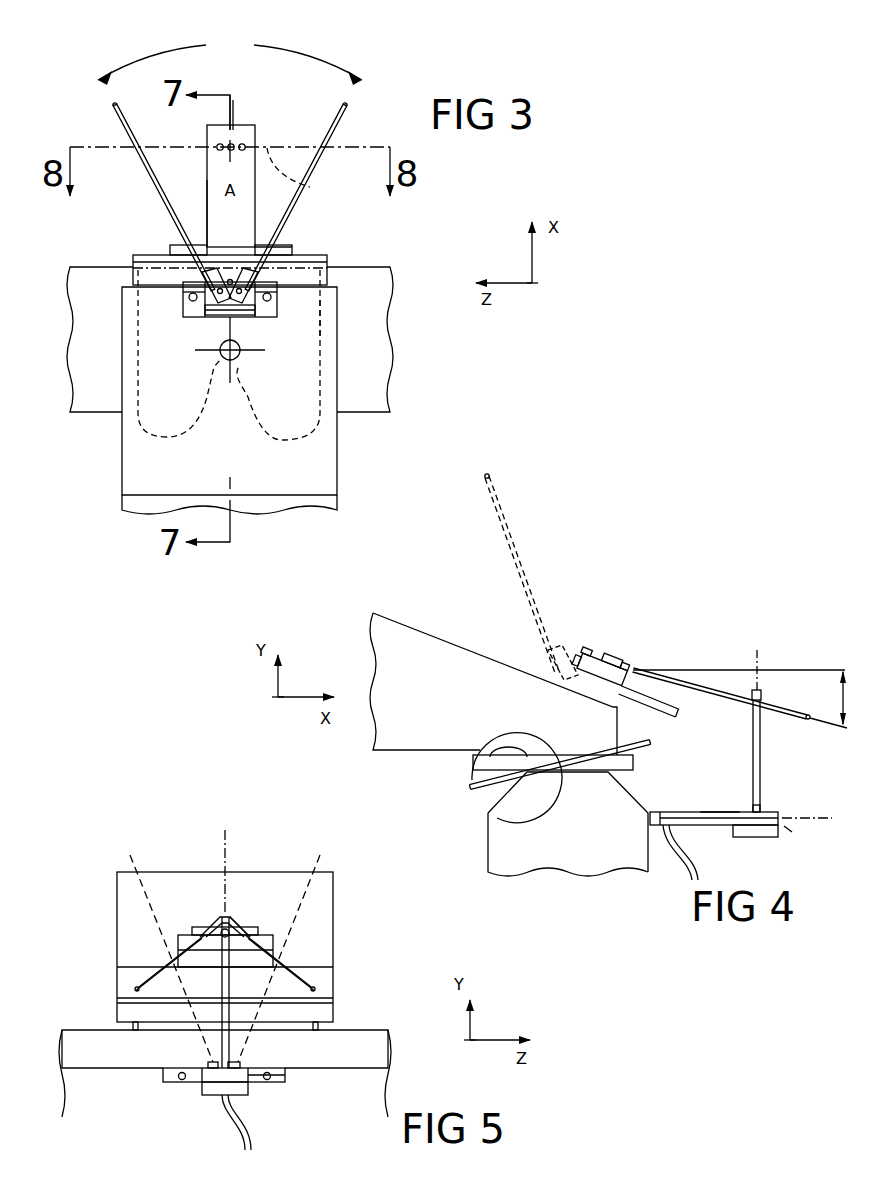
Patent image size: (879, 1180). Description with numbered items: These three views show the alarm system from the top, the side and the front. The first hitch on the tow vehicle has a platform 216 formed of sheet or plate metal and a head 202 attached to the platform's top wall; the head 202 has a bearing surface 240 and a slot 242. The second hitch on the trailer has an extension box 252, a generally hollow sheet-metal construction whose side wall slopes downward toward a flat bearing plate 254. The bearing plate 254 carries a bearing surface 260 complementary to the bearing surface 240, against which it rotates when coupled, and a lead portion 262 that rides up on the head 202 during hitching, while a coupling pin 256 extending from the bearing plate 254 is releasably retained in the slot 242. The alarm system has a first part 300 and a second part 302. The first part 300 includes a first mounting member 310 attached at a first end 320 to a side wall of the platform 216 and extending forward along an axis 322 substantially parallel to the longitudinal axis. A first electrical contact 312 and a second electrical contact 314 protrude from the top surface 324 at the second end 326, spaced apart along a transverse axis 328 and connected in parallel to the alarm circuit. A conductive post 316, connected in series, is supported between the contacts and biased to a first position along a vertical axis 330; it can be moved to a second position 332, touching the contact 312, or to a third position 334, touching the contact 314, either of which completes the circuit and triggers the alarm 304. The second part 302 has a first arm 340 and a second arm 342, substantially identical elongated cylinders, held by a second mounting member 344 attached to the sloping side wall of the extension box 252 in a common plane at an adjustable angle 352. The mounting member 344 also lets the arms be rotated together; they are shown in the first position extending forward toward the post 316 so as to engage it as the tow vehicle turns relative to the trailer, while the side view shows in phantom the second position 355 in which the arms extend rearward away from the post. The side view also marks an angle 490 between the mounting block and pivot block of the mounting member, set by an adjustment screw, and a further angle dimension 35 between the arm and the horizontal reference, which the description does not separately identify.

In FIG. 4, the angle 35 is at (838, 703).
In FIG. 3, the head 202 is at (318, 337).
In FIG. 3, the platform 216 is at (106, 268).
In FIG. 4, the bearing surface 240 is at (490, 778).
In FIG. 3, the slot 242 is at (282, 440).
In FIG. 3, the extension box 252 is at (120, 430).
In FIG. 4, the extension box 252 is at (392, 613).
In FIG. 3, the bearing plate 254 is at (148, 255).
In FIG. 4, the bearing plate 254 is at (480, 757).
In FIG. 3, the coupling pin 256 is at (243, 368).
In FIG. 4, the bearing surface 260 is at (500, 827).
In FIG. 4, the lead portion 262 is at (652, 744).
In FIG. 3, the first part 300 is at (208, 168).
In FIG. 4, the first part 300 is at (700, 830).
In FIG. 5, the first part 300 is at (160, 1076).
In FIG. 3, the second part 302 is at (186, 298).
In FIG. 4, the second part 302 is at (607, 655).
In FIG. 5, the second part 302 is at (216, 918).
In FIG. 4, the alarm 304 is at (760, 840).
In FIG. 5, the alarm 304 is at (250, 1088).
In FIG. 3, the first mounting member 310 is at (212, 200).
In FIG. 4, the first mounting member 310 is at (690, 810).
In FIG. 5, the first mounting member 310 is at (286, 1075).
In FIG. 3, the first electrical contact 312 is at (219, 143).
In FIG. 5, the first electrical contact 312 is at (240, 1061).
In FIG. 3, the second electrical contact 314 is at (245, 143).
In FIG. 4, the second electrical contact 314 is at (757, 805).
In FIG. 5, the second electrical contact 314 is at (210, 1061).
In FIG. 3, the conductive post 316 is at (235, 142).
In FIG. 4, the conductive post 316 is at (760, 748).
In FIG. 5, the conductive post 316 is at (231, 1010).
In FIG. 3, the first end 320 is at (290, 252).
In FIG. 3, the axis 322 is at (236, 100).
In FIG. 4, the axis 322 is at (794, 832).
In FIG. 4, the top surface 324 is at (723, 810).
In FIG. 4, the second end 326 is at (778, 810).
In FIG. 3, the axis 328 is at (309, 174).
In FIG. 4, the axis 330 is at (763, 668).
In FIG. 5, the axis 330 is at (228, 848).
In FIG. 5, the second position 332 is at (322, 858).
In FIG. 5, the third position 334 is at (124, 858).
In FIG. 3, the first arm 340 is at (122, 128).
In FIG. 3, the second arm 342 is at (338, 128).
In FIG. 4, the second arm 342 is at (700, 690).
In FIG. 5, the second arm 342 is at (137, 982).
In FIG. 3, the second mounting member 344 is at (275, 305).
In FIG. 4, the second mounting member 344 is at (625, 662).
In FIG. 5, the second mounting member 344 is at (236, 918).
In FIG. 3, the angle 352 is at (230, 61).
In FIG. 4, the second position 355 is at (517, 542).
In FIG. 4, the angle 490 is at (688, 712).